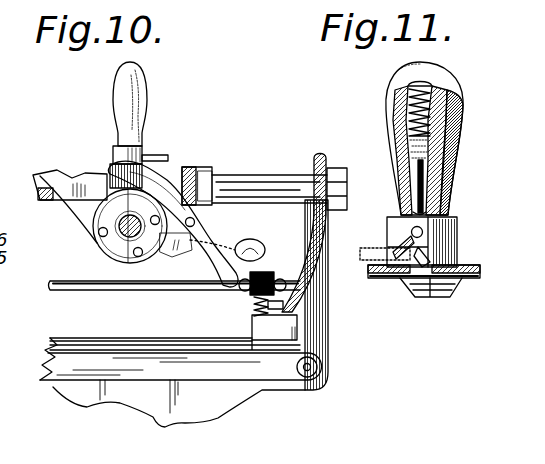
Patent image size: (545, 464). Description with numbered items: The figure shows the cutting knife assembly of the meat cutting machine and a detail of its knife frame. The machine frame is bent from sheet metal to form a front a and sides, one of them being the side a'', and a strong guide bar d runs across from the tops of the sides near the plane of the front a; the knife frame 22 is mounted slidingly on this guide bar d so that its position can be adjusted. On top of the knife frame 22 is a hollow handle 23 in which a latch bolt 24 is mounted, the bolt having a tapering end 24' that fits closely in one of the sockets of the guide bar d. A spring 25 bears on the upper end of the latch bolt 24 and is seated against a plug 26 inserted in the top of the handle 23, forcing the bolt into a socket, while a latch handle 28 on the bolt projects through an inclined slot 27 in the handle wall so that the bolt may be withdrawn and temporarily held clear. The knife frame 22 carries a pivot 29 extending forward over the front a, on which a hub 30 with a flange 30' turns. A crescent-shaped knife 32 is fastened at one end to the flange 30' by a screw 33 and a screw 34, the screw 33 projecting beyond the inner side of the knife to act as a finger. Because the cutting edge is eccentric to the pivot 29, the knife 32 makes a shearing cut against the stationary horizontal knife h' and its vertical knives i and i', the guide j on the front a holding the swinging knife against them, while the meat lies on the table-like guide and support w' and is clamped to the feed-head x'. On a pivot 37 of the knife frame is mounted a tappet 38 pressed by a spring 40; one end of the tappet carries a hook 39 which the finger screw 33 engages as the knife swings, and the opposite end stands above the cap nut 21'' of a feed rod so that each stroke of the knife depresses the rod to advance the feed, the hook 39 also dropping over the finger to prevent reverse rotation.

In FIG. 10, the hollow handle 23 is at (120, 110).
In FIG. 11, the hollow handle 23 is at (388, 86).
In FIG. 10, the latch handle 28 is at (160, 155).
In FIG. 11, the latch handle 28 is at (430, 230).
In FIG. 10, the knife 32 is at (62, 178).
In FIG. 10, the screw 33 is at (80, 211).
In FIG. 10, the hook 39 is at (112, 174).
In FIG. 10, the hub 30 is at (142, 235).
In FIG. 10, the flange 30' is at (73, 250).
In FIG. 10, the pivot 29 is at (121, 240).
In FIG. 10, the screw 34 is at (142, 256).
In FIG. 10, the knife frame 22 is at (189, 167).
In FIG. 11, the knife frame 22 is at (458, 280).
In FIG. 10, the spring 40 is at (192, 172).
In FIG. 10, the guide bar d is at (258, 174).
In FIG. 10, the side a'' is at (304, 214).
In FIG. 10, the pivot 37 is at (195, 222).
In FIG. 10, the tappet 38 is at (240, 244).
In FIG. 10, the cap nut 21'' is at (304, 295).
In FIG. 10, the meat guide and support w' is at (175, 325).
In FIG. 10, the vertical knife i' is at (175, 328).
In FIG. 10, the vertical knife i is at (161, 324).
In FIG. 10, the feed-head x' is at (202, 323).
In FIG. 10, the horizontal stationary knife h' is at (32, 351).
In FIG. 10, the guide j is at (47, 370).
In FIG. 10, the front a is at (157, 406).
In FIG. 11, the plug 26 is at (446, 70).
In FIG. 11, the spring 25 is at (446, 118).
In FIG. 11, the latch bolt 24 is at (449, 187).
In FIG. 11, the pawl 27 is at (411, 232).
In FIG. 11, the tapering end 24' is at (431, 305).